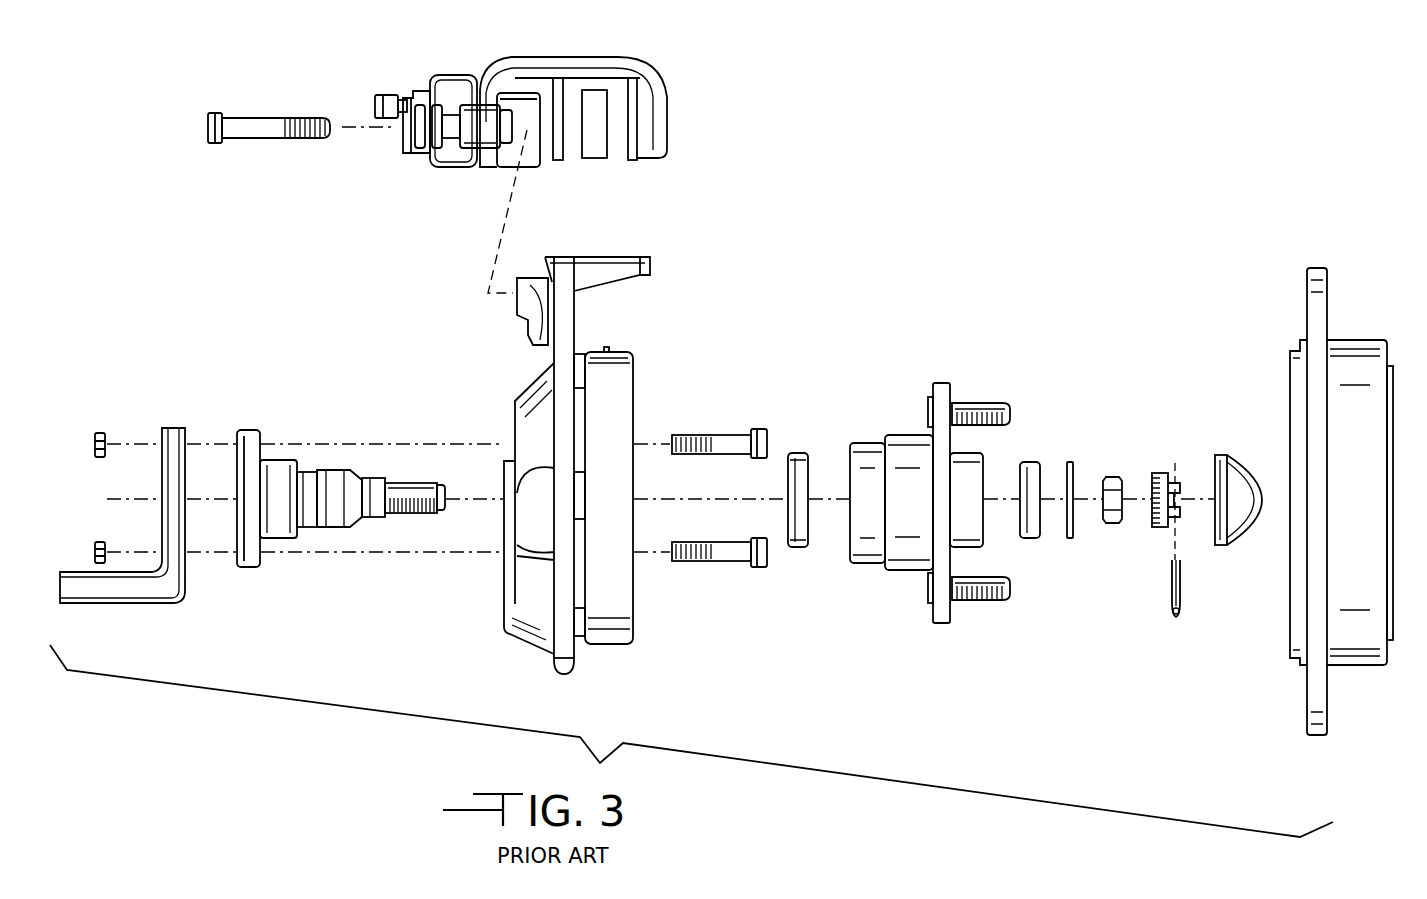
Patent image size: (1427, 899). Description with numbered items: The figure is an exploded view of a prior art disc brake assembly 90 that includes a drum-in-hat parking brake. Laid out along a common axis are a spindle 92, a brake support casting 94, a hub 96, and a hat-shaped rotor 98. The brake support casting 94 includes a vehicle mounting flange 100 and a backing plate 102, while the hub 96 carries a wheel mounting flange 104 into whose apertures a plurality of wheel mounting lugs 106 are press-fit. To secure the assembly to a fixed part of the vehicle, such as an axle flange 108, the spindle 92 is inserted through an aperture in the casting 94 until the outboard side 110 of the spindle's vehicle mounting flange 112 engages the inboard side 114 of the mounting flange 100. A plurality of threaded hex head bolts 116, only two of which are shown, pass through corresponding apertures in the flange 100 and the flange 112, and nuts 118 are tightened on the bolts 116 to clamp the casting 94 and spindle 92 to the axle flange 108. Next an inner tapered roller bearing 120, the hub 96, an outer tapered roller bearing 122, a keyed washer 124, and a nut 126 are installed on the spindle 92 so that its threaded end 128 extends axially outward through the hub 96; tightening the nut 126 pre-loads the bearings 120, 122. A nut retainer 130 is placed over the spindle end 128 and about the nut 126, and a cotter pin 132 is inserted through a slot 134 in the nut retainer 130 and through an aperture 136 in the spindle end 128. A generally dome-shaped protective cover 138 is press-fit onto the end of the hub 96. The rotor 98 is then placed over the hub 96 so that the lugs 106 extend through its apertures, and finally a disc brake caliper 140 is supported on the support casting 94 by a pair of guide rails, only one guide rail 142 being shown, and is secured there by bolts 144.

The disc brake assembly 90 is at (855, 268).
The spindle 92 is at (323, 538).
The brake support casting 94 is at (527, 648).
The hub 96 is at (898, 570).
The hat-shaped rotor 98 is at (1356, 671).
The vehicle mounting flange 100 is at (515, 414).
The backing plate 102 is at (575, 327).
The wheel mounting flange 104 is at (938, 383).
The wheel mounting lugs 106 is at (985, 402).
The axle flange 108 is at (172, 427).
The outboard side 110 is at (263, 440).
The vehicle mounting flange 112 is at (243, 428).
The inboard side 114 is at (517, 576).
The threaded hex head bolts 116 is at (725, 433).
The nuts 118 is at (99, 430).
The inner tapered roller bearing 120 is at (797, 548).
The outer tapered roller bearing 122 is at (1028, 543).
The keyed washer 124 is at (1073, 452).
The nut 126 is at (1110, 525).
The threaded end 128 is at (407, 480).
The nut retainer 130 is at (1158, 472).
The cotter pin 132 is at (1182, 597).
The slot 134 is at (1192, 497).
The aperture 136 is at (446, 506).
The protective cover 138 is at (1255, 530).
The disc brake caliper 140 is at (625, 58).
The guide rail 142 is at (580, 253).
The bolts 144 is at (270, 142).